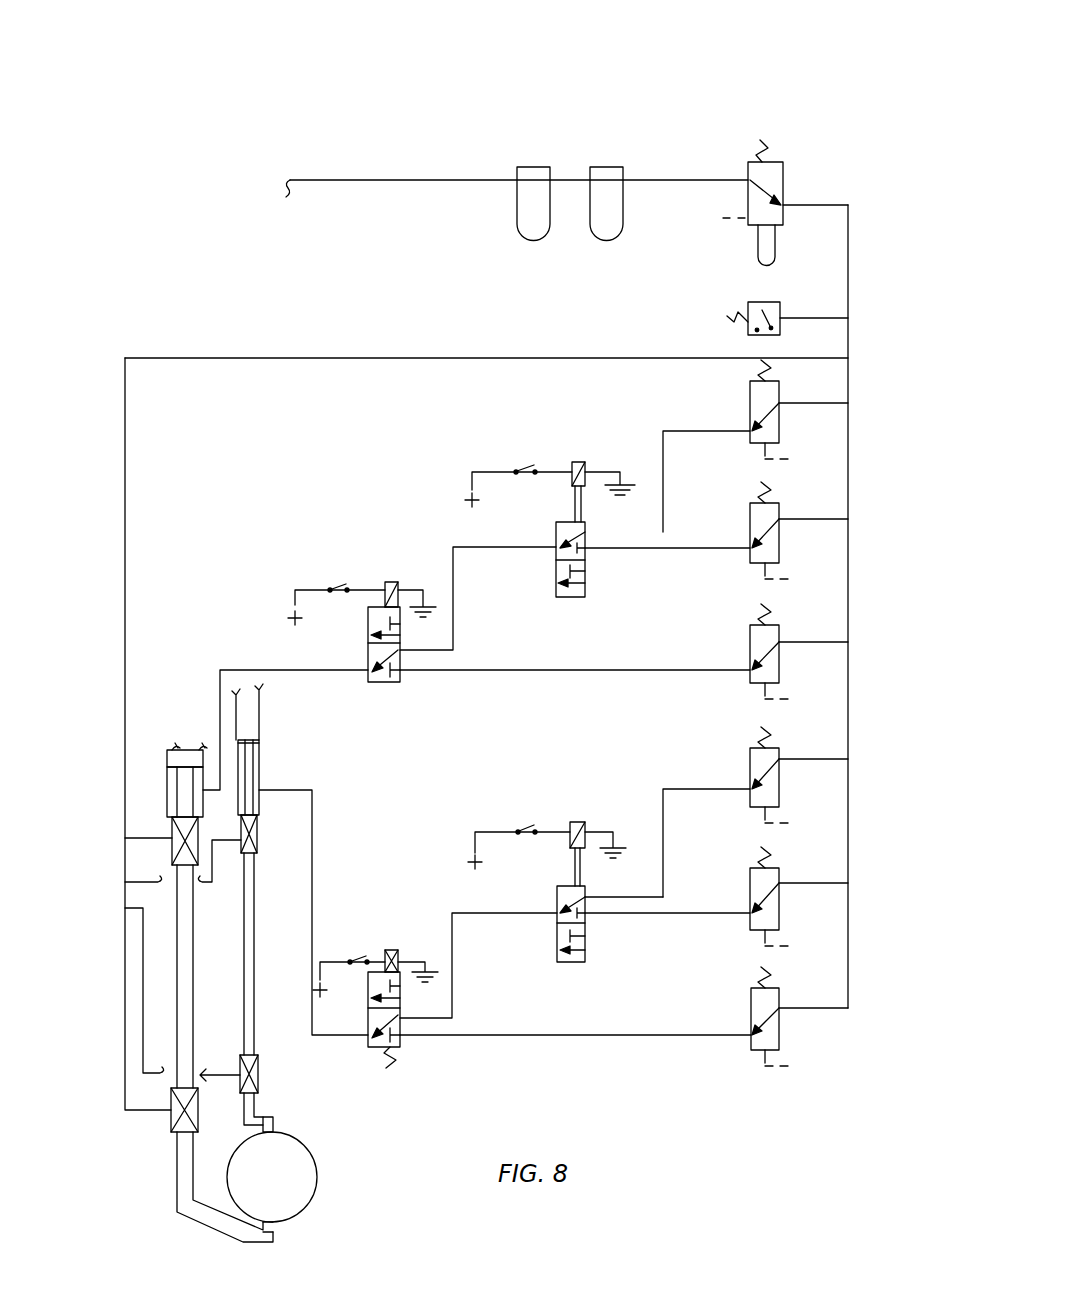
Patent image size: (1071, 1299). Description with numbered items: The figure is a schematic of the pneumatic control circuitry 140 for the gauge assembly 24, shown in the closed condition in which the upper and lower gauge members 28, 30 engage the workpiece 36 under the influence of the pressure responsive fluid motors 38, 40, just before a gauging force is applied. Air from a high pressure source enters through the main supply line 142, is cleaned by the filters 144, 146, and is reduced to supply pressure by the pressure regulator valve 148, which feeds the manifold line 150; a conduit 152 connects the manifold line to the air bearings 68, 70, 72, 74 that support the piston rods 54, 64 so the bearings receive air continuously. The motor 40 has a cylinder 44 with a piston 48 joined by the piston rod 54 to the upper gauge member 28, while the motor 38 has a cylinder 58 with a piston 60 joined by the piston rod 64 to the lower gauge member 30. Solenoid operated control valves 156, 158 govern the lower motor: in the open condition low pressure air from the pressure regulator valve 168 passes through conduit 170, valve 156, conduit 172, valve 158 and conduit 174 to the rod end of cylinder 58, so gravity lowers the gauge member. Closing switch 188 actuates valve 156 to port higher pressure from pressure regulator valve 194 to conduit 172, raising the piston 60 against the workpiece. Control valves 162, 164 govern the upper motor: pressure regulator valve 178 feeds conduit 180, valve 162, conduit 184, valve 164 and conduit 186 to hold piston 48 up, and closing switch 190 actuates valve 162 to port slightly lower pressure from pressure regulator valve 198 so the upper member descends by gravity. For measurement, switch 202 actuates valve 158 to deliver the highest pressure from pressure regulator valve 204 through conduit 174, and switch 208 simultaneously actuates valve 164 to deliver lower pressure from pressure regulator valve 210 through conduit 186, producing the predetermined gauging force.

The pneumatic control circuitry 140 is at (612, 117).
The main supply line 142 is at (434, 160).
The filter 144 is at (518, 232).
The filter 146 is at (604, 238).
The pressure regulator valve 148 is at (783, 180).
The manifold line 150 is at (848, 292).
The conduit 152 is at (334, 340).
The solenoid operated control valve 156 is at (604, 413).
The solenoid operated control valve 158 is at (399, 578).
The solenoid operated control valve 162 is at (606, 783).
The solenoid operated control valve 164 is at (393, 946).
The pressure regulator valve 168 is at (779, 516).
The conduit 170 is at (658, 548).
The conduit 172 is at (453, 610).
The conduit 174 is at (336, 652).
The pressure regulator valve 178 is at (779, 880).
The conduit 180 is at (656, 913).
The conduit 184 is at (452, 986).
The conduit 186 is at (312, 812).
The switch 188 is at (526, 470).
The switch 190 is at (528, 832).
The pressure regulator valve 194 is at (779, 396).
The pressure regulator valve 198 is at (779, 760).
The switch 202 is at (340, 590).
The pressure regulator valve 204 is at (779, 638).
The switch 208 is at (364, 936).
The pressure regulator valve 210 is at (779, 1003).
The gauge assembly 24 is at (160, 988).
The upper gauge member 28 is at (268, 1120).
The lower gauge member 30 is at (244, 1241).
The workpiece 36 is at (308, 1156).
The pressure responsive fluid motor 38 is at (182, 733).
The pressure responsive fluid motor 40 is at (268, 766).
The cylinder 44 is at (262, 714).
The piston 48 is at (254, 742).
The piston rod 54 is at (256, 930).
The cylinder 58 is at (172, 800).
The piston 60 is at (172, 752).
The piston rod 64 is at (196, 976).
The air bearing 68 is at (258, 838).
The air bearing 70 is at (258, 1074).
The air bearing 72 is at (172, 848).
The air bearing 74 is at (167, 1118).